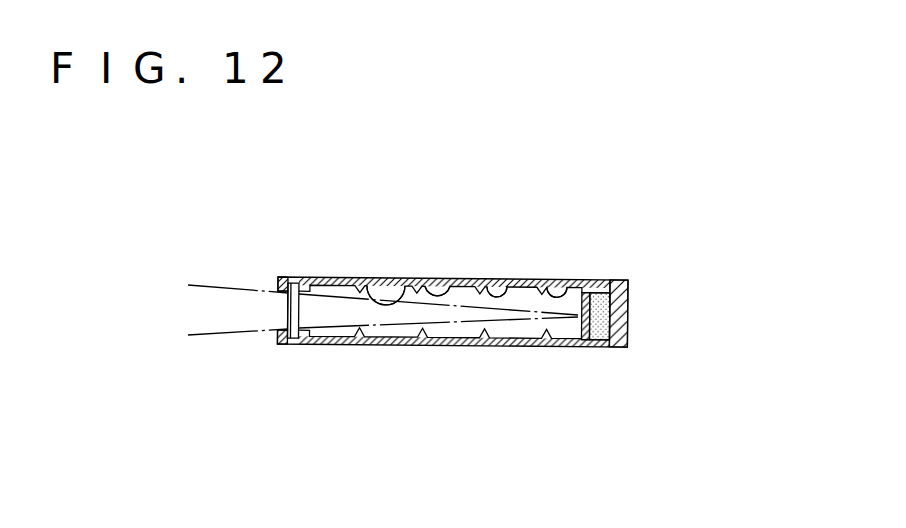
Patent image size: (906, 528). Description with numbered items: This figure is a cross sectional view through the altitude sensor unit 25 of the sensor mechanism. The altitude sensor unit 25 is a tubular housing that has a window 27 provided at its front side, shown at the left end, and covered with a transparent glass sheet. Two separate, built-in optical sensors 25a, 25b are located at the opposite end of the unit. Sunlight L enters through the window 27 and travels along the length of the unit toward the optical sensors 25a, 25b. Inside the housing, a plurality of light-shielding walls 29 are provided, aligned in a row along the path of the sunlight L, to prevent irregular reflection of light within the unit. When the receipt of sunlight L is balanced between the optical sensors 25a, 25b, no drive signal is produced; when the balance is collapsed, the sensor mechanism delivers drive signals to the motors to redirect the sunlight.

The altitude sensor unit 25 is at (463, 345).
The optical sensor 25a is at (710, 320).
The optical sensor 25b is at (588, 322).
The window 27 is at (282, 307).
The light-shielding walls 29 is at (573, 277).
The sunlight L is at (207, 335).